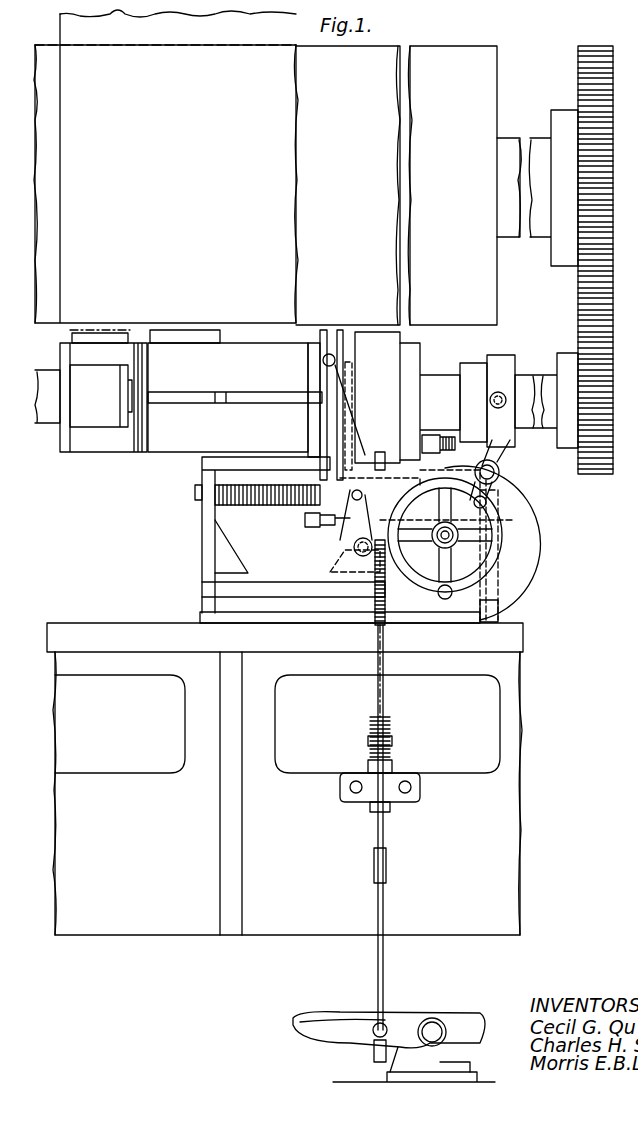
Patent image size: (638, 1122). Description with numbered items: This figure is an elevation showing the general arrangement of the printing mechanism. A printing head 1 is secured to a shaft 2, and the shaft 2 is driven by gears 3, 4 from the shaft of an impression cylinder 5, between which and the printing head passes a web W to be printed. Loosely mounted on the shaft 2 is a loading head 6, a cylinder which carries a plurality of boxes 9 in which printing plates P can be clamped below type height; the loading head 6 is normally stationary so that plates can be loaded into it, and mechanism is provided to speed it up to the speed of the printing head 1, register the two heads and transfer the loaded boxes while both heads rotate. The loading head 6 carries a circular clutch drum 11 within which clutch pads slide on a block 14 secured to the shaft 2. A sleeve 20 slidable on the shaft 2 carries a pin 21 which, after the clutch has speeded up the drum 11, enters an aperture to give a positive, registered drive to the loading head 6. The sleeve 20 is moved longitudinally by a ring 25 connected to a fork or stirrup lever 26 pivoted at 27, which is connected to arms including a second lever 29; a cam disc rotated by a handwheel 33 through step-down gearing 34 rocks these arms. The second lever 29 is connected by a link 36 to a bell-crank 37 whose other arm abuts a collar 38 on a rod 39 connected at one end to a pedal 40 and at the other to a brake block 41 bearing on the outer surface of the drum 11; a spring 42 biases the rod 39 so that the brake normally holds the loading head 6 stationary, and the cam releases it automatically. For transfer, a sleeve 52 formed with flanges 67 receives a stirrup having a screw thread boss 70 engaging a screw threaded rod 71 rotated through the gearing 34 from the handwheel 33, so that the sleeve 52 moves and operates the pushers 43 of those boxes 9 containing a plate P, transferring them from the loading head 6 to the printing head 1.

The web W is at (296, 240).
The impression cylinder 5 is at (348, 185).
The block 14 is at (420, 332).
The flanges 67 is at (330, 332).
The gear 4 is at (583, 283).
The gear 3 is at (598, 466).
The plate P is at (80, 330).
The box 9 is at (235, 322).
The printing head 1 is at (103, 452).
The shaft 2 is at (52, 410).
The loading head 6 is at (228, 397).
The pushers 43 is at (268, 403).
The sleeve 52 is at (310, 378).
The clutch drum 11 is at (367, 401).
The pin 21 is at (430, 434).
The sleeve 20 is at (473, 402).
The ring 25 is at (503, 360).
The fork or stirrup lever 26 is at (495, 405).
The pivot 27 is at (500, 474).
The second lever 29 is at (488, 502).
The link 36 is at (500, 522).
The handwheel 33 is at (514, 540).
The brake block 41 is at (376, 452).
The screw threaded rod 71 is at (268, 506).
The screw thread boss 70 is at (328, 518).
The bell-crank 37 is at (357, 530).
The collar 38 is at (360, 556).
The spring 42 is at (373, 600).
The step-down gearing 34 is at (415, 620).
The rod 39 is at (385, 662).
The pedal 40 is at (346, 1018).